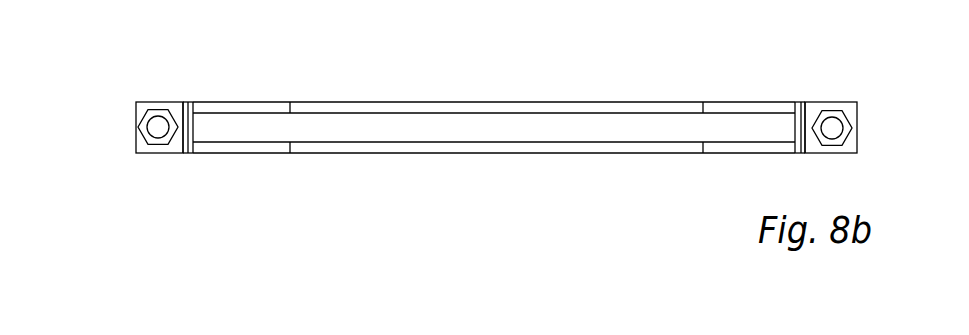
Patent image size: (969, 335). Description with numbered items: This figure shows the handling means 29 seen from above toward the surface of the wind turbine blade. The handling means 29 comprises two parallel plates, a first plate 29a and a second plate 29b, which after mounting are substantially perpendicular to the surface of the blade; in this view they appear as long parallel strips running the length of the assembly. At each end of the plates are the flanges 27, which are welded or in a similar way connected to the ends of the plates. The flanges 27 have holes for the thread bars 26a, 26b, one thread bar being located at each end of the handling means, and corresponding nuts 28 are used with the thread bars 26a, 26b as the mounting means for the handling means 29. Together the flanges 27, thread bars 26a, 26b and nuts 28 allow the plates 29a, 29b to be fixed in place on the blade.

The thread bar 26a is at (156, 131).
The thread bar 26b is at (833, 127).
The flange 27 is at (170, 153).
The nut 28 is at (198, 102).
The handling means 29 is at (527, 193).
The first plate 29a is at (347, 153).
The second plate 29b is at (375, 107).